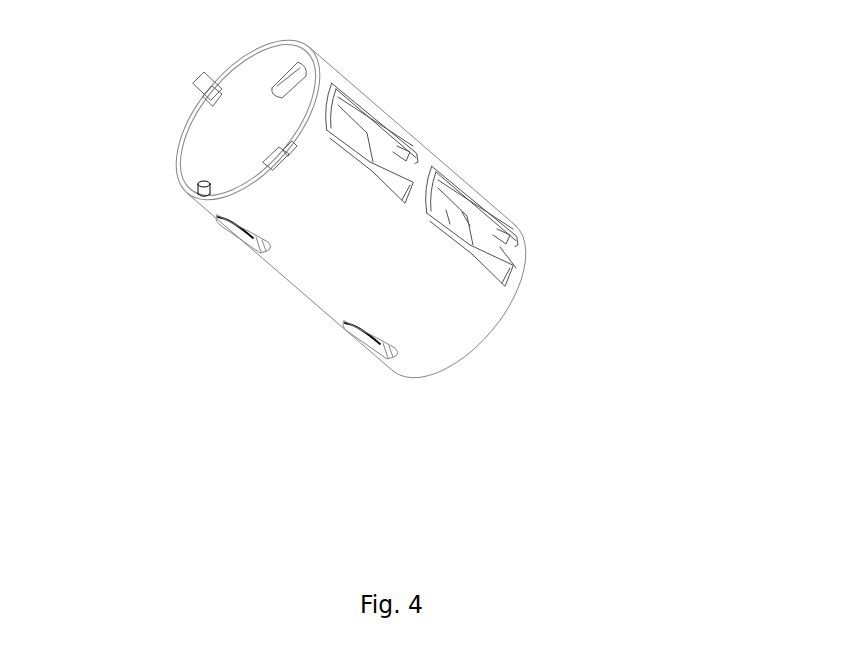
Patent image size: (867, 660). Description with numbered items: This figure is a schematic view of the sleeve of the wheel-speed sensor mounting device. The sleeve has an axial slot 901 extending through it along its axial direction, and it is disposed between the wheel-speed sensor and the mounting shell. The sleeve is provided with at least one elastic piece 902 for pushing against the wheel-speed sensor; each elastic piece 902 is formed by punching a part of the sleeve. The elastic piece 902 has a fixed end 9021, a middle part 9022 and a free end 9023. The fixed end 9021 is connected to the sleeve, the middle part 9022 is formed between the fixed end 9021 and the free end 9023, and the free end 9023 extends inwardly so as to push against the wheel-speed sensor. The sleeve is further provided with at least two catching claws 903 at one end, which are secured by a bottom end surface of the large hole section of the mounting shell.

The axial slot 901 is at (183, 190).
The elastic piece 902 is at (347, 123).
The catching claws 903 is at (195, 85).
The fixed end 9021 is at (500, 247).
The middle part 9022 is at (462, 212).
The free end 9023 is at (446, 210).